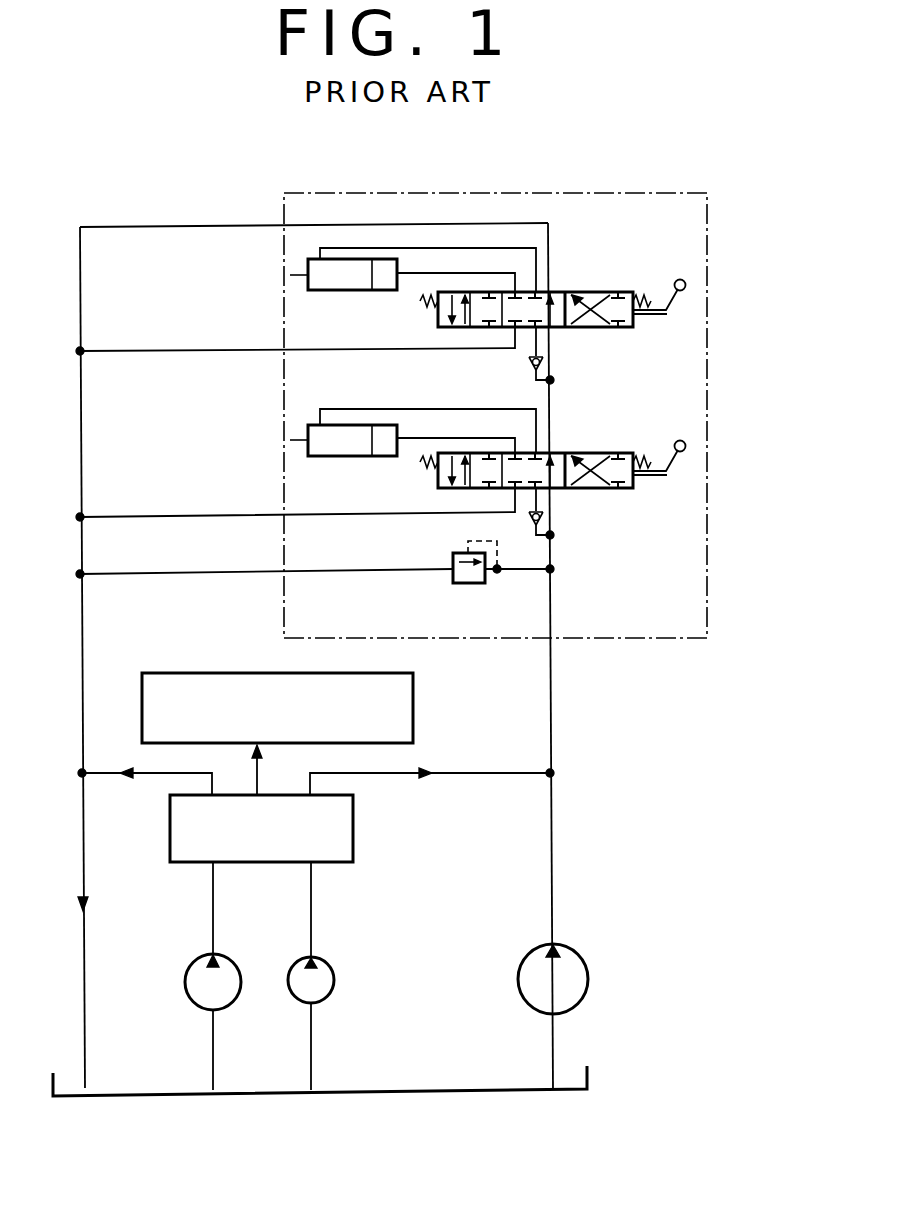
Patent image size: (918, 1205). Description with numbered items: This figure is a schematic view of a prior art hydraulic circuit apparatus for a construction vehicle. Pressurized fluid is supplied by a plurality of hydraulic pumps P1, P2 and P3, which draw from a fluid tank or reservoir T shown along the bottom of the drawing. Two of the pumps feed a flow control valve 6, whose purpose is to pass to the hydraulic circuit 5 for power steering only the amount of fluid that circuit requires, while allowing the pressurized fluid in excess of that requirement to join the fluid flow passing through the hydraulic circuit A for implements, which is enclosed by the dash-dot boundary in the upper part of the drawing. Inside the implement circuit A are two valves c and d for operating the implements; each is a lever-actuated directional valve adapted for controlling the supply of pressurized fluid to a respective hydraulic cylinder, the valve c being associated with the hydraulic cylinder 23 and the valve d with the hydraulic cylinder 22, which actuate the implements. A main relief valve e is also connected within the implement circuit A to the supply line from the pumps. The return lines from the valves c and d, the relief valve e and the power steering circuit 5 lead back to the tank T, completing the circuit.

The hydraulic circuit for implements A is at (707, 487).
The hydraulic cylinder 23 is at (340, 290).
The hydraulic cylinder 22 is at (340, 456).
The valve for operating the implements c is at (623, 327).
The valve for operating the implements d is at (625, 488).
The main relief valve e is at (485, 583).
The hydraulic circuit for power steering 5 is at (185, 672).
The flow control valve 6 is at (353, 828).
The hydraulic pump P1 is at (573, 1010).
The hydraulic pump P2 is at (230, 1005).
The hydraulic pump P3 is at (326, 1002).
The fluid tank T is at (445, 1092).